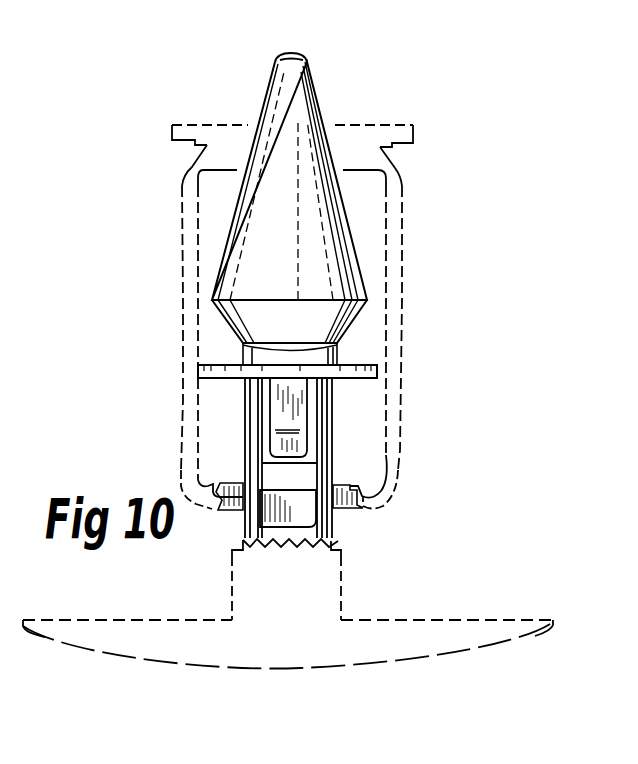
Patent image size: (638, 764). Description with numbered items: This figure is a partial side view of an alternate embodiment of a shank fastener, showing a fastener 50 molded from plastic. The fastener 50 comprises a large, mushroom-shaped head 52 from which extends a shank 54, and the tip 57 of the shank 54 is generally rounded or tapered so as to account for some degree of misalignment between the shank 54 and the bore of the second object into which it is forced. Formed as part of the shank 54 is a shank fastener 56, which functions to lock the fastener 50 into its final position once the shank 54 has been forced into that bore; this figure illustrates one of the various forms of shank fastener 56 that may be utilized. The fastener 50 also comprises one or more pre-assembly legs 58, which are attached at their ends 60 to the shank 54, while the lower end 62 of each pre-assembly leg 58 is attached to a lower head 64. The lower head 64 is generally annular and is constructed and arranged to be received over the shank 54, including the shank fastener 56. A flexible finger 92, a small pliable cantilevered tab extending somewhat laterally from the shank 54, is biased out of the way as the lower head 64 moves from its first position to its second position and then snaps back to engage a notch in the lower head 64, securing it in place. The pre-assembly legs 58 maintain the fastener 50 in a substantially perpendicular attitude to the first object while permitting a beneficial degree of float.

The fastener 50 is at (288, 353).
The head 52 is at (133, 656).
The shank 54 is at (333, 410).
The shank fastener 56 is at (236, 184).
The tip 57 is at (298, 56).
The pre-assembly leg 58 is at (172, 295).
The ends 60 is at (188, 491).
The lower end 62 is at (185, 176).
The lower head 64 is at (175, 124).
The flexible finger 92 is at (288, 456).